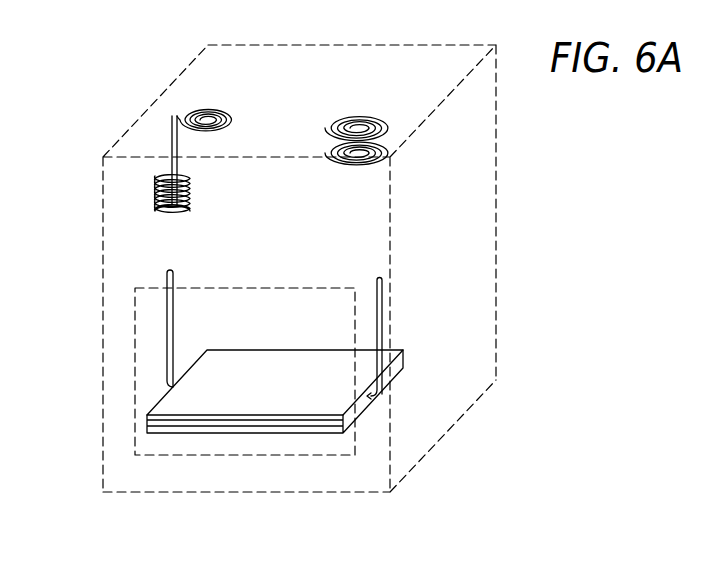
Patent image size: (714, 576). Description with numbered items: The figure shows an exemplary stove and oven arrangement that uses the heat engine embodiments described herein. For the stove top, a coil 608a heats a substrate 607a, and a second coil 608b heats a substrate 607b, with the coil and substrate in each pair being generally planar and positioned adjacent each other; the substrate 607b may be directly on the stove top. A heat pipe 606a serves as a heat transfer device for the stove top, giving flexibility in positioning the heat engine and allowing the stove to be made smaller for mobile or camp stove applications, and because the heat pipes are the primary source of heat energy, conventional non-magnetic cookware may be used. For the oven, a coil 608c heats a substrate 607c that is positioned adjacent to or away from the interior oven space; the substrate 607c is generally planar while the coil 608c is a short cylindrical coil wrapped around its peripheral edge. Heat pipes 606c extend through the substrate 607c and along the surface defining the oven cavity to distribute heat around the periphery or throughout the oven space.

The heat pipe 606a is at (184, 110).
The substrate 607a is at (160, 173).
The coil 608a is at (160, 200).
The substrate 607b is at (358, 112).
The coil 608b is at (390, 148).
The heat pipes 606c is at (167, 330).
The substrate 607c is at (172, 400).
The coil 608c is at (248, 423).